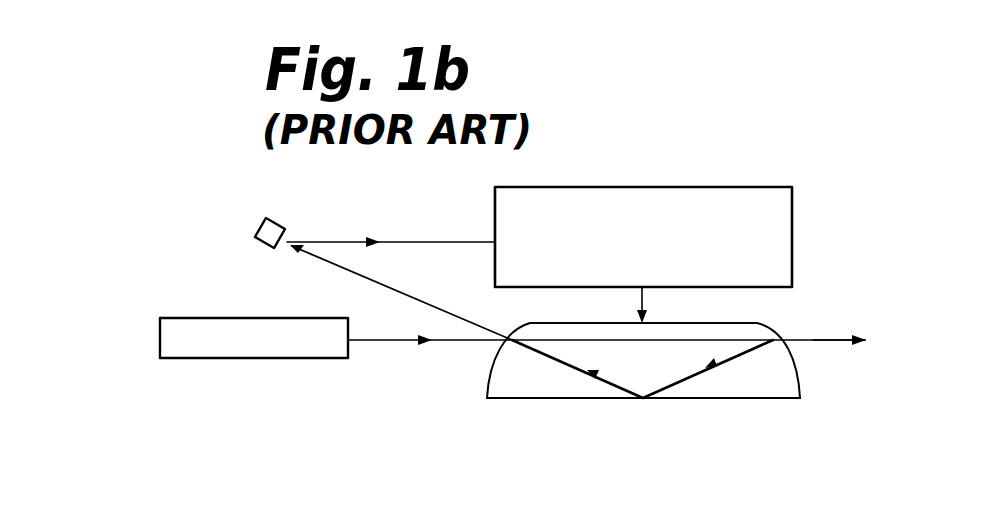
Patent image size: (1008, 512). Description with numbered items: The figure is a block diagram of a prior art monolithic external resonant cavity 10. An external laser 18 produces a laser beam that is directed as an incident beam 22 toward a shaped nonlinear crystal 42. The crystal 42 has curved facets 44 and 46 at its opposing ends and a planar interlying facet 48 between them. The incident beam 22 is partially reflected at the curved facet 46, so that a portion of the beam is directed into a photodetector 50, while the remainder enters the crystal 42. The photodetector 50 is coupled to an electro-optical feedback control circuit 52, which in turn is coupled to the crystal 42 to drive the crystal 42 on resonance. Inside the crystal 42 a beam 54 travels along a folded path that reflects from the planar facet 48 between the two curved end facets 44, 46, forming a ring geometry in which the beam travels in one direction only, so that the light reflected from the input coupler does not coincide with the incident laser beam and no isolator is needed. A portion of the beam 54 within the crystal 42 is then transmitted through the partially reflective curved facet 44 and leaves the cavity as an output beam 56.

The prior art electro-optic feedback control system 10 is at (812, 203).
The external laser 18 is at (183, 318).
The beam 22 is at (350, 338).
The shaped nonlinear crystal 42 is at (528, 382).
The curved facet 44 is at (802, 388).
The curved facet 46 is at (492, 365).
The planar interlying facet 48 is at (740, 396).
The photodetector 50 is at (257, 220).
The electro-optical feedback control circuit 52 is at (495, 238).
The beam 54 is at (728, 322).
The output beam 56 is at (813, 337).